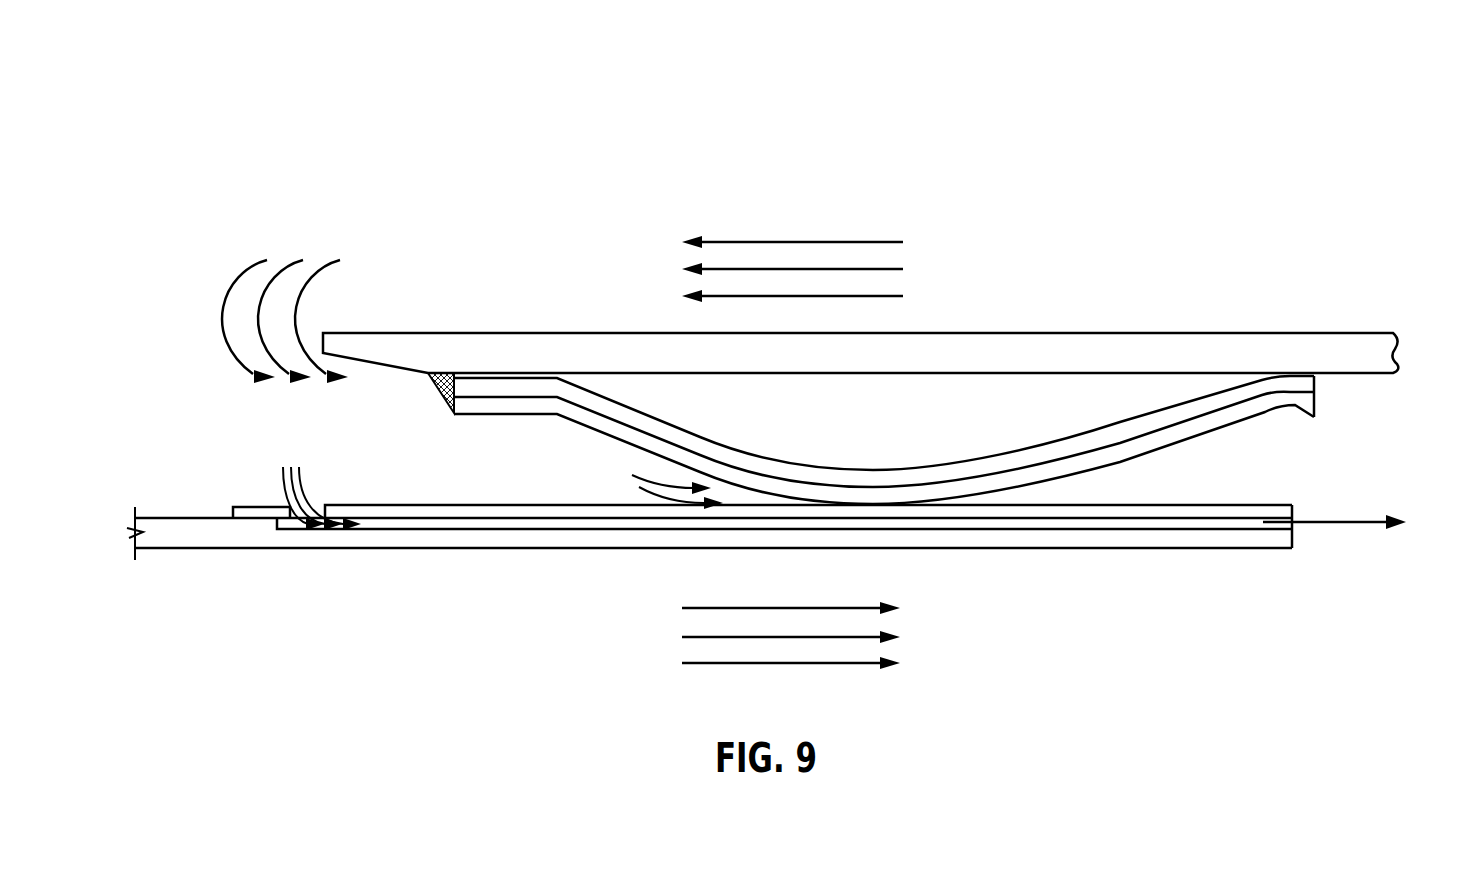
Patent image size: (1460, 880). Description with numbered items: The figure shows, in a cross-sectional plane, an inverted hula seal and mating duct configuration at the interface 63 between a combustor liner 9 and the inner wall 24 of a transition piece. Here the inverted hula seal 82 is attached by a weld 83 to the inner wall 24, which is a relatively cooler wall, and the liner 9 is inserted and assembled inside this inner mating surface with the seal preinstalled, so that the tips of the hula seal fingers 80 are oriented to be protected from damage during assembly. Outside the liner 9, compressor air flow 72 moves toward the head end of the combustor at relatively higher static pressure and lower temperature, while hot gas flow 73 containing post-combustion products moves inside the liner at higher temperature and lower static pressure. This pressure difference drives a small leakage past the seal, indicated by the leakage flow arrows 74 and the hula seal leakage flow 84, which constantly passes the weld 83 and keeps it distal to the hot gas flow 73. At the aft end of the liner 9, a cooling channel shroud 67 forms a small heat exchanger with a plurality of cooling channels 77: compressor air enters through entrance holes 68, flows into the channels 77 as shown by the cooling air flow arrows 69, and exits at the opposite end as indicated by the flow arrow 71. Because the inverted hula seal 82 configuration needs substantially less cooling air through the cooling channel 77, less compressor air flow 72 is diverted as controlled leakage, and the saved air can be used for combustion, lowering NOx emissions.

The interface 63 is at (180, 126).
The leakage flow arrows 74 is at (345, 248).
The compressor air flow 72 is at (917, 240).
The inner wall of transition piece 24 is at (466, 375).
The weld 83 is at (438, 387).
The inverted hula seal 82 is at (1235, 417).
The tips of hula seal fingers 80 is at (1317, 387).
The hula seal leakage flow 84 is at (628, 473).
The combustor liner 9 is at (195, 535).
The cooling channels 77 is at (562, 523).
The cooling channel shroud 67 is at (1293, 510).
The entrance holes 68 is at (290, 515).
The cooling air flow arrows 69 is at (305, 456).
The flow arrow 71 is at (1385, 517).
The hot gas flow 73 is at (668, 607).